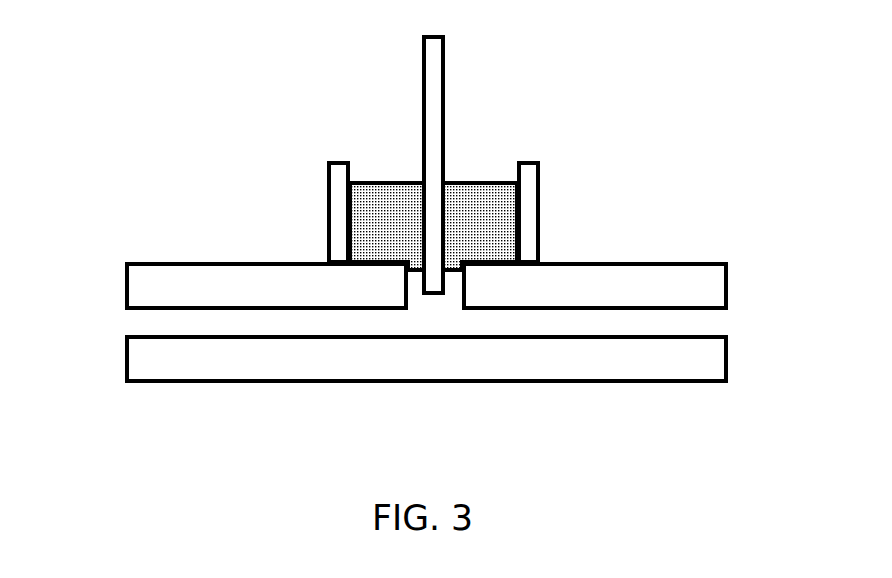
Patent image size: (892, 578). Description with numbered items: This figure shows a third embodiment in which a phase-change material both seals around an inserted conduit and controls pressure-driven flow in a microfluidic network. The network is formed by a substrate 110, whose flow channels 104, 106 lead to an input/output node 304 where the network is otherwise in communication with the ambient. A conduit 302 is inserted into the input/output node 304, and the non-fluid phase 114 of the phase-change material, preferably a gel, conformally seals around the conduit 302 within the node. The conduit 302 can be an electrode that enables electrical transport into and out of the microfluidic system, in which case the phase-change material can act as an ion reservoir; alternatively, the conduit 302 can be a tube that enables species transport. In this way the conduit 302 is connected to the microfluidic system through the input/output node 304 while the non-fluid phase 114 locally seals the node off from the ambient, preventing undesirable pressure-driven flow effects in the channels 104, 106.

The flow channel 104 is at (146, 318).
The flow channel 106 is at (718, 323).
The substrate 110 is at (422, 322).
The non-fluid phase 114 is at (382, 180).
The conduit 302 is at (445, 52).
The input/output node 304 is at (495, 165).